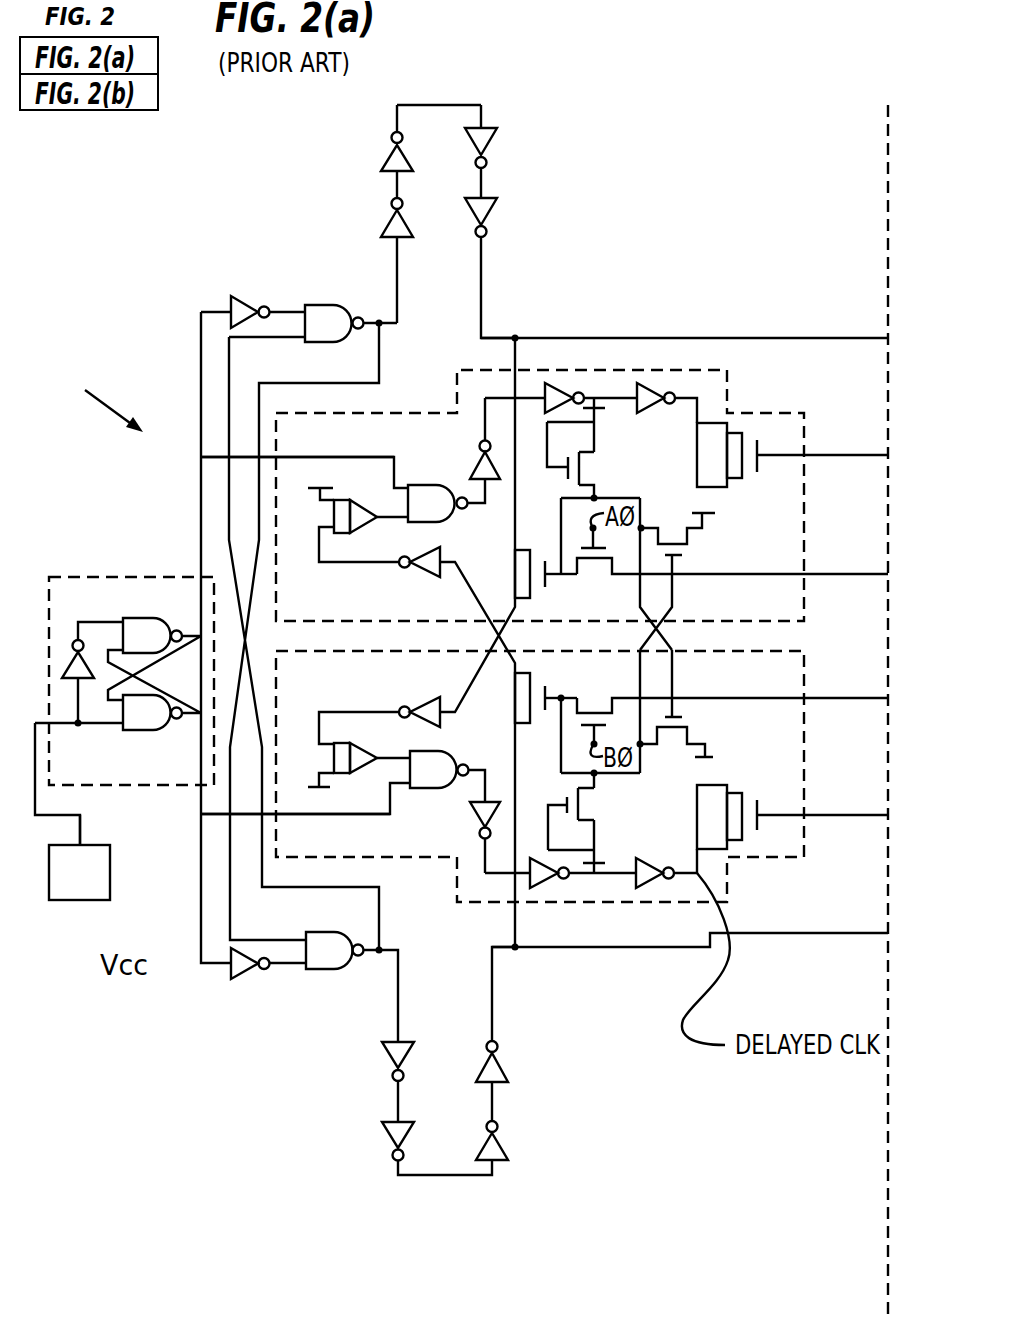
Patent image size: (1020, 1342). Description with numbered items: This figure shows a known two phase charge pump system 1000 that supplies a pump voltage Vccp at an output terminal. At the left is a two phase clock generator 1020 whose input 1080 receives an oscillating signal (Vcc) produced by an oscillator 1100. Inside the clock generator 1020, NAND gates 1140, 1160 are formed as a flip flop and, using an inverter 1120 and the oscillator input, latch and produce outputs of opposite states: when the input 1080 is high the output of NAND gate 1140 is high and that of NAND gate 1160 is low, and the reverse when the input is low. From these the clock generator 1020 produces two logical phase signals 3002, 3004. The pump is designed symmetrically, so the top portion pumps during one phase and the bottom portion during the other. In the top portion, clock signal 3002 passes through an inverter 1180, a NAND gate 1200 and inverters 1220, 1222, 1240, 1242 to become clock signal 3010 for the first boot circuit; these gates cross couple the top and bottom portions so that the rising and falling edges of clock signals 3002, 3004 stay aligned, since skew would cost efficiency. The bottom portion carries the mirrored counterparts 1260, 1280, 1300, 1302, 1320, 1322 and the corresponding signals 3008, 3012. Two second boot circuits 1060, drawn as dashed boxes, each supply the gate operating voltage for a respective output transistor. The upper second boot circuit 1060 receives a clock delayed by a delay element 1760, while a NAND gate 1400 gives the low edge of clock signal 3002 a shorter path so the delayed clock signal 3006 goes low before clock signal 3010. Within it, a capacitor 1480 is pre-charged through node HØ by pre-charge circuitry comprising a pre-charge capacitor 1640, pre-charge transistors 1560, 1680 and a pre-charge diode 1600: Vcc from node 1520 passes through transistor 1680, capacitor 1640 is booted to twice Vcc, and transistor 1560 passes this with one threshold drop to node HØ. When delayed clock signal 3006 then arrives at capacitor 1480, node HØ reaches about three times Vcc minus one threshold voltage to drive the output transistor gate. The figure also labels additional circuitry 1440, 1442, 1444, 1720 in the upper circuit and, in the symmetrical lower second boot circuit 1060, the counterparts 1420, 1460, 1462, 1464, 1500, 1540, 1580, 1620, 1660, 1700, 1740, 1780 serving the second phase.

The two phase charge pump system 1000 is at (87, 396).
The two phase clock generator 1020 is at (168, 566).
The second boot circuit 1060 is at (804, 604).
The input 1080 is at (80, 823).
The oscillator 1100 is at (80, 903).
The inverter 1120 is at (88, 679).
The NAND gate 1140 is at (146, 618).
The NAND gate 1160 is at (138, 731).
The inverter 1180 is at (251, 297).
The NAND gate 1200 is at (317, 305).
The inverter 1220 is at (388, 218).
The inverter 1222 is at (390, 156).
The inverter 1240 is at (495, 140).
The inverter 1242 is at (493, 206).
The inverter 1260 is at (242, 977).
The NAND gate 1280 is at (320, 971).
The inverter 1300 is at (392, 1060).
The inverter 1302 is at (392, 1140).
The inverter 1320 is at (502, 1140).
The inverter 1322 is at (502, 1062).
The NAND gate 1400 is at (418, 485).
The NAND gate 1420 is at (433, 790).
The inverter 1440 is at (658, 405).
The inverter 1442 is at (562, 382).
The inverter 1444 is at (484, 438).
The inverter 1460 is at (657, 860).
The inverter 1462 is at (548, 892).
The inverter 1464 is at (474, 812).
The capacitor 1480 is at (737, 479).
The transistor 1500 is at (736, 793).
The node 1520 is at (558, 572).
The node 1540 is at (558, 700).
The pre-charge transistor 1560 is at (595, 560).
The transistor 1580 is at (590, 712).
The pre-charge diode 1600 is at (582, 467).
The transistor 1620 is at (580, 805).
The pre-charge capacitor 1640 is at (512, 577).
The pass transistor 1660 is at (513, 700).
The pre-charge transistor 1680 is at (675, 542).
The transistor 1700 is at (672, 728).
The inverter 1720 is at (427, 576).
The inverter 1740 is at (432, 697).
The delay element 1760 is at (345, 500).
The tri-state buffer 1780 is at (350, 775).
The clock signal 3002 is at (200, 483).
The clock signal 3004 is at (201, 796).
The delayed clock signal 3006 is at (690, 394).
The signal line 3008 is at (290, 816).
The clock signal 3010 is at (494, 337).
The clock line 3012 is at (497, 950).